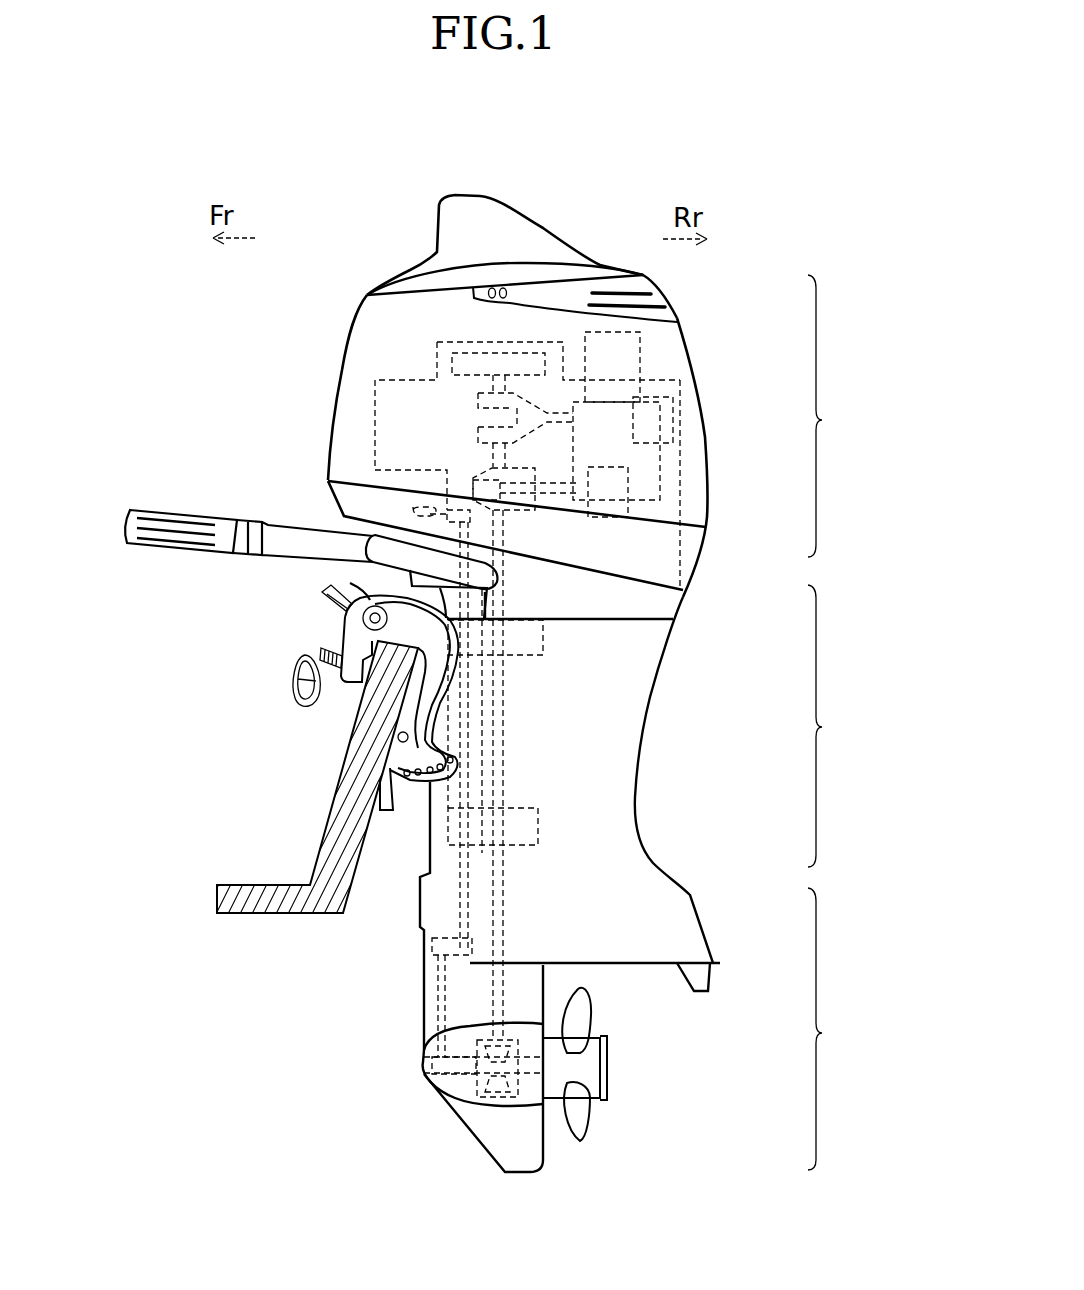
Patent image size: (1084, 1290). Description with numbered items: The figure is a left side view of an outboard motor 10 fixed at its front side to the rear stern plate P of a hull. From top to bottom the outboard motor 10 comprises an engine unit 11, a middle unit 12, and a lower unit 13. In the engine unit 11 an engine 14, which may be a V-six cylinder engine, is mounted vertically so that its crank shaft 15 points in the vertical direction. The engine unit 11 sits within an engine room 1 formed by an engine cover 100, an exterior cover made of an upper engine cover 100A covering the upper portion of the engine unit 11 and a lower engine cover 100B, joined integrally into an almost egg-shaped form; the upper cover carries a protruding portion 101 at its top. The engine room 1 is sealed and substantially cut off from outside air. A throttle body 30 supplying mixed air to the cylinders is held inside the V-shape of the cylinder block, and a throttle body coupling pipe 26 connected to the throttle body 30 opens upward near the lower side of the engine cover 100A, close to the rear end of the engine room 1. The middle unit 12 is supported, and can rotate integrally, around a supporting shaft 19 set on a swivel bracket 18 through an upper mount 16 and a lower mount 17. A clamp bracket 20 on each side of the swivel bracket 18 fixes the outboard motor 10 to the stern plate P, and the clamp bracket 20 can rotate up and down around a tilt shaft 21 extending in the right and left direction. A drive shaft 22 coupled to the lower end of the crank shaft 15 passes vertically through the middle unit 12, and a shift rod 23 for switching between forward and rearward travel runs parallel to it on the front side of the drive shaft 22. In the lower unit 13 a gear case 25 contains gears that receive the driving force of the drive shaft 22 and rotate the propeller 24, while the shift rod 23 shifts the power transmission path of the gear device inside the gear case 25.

The outboard motor 10 is at (408, 262).
The protruding portion of engine cover 101 is at (482, 197).
The engine cover 100A is at (528, 272).
The engine cover 100B is at (643, 552).
The engine cover 100 is at (703, 432).
The engine room 1 is at (697, 490).
The engine unit 11 is at (834, 416).
The middle unit 12 is at (834, 726).
The lower unit 13 is at (834, 1029).
The engine 14 is at (653, 380).
The crank shaft 15 is at (487, 460).
The upper mount 16 is at (530, 617).
The lower mount 17 is at (510, 807).
The swivel bracket 18 is at (400, 715).
The supporting shaft 19 is at (480, 697).
The clamp bracket 20 is at (337, 637).
The tilt shaft 21 is at (360, 597).
The drive shaft 22 is at (502, 763).
The shift rod 23 is at (467, 733).
The propeller 24 is at (587, 1018).
The gear case 25 is at (486, 1110).
The throttle body coupling pipe 26 is at (640, 357).
The throttle body 30 is at (663, 493).
The rear stern plate P is at (330, 792).